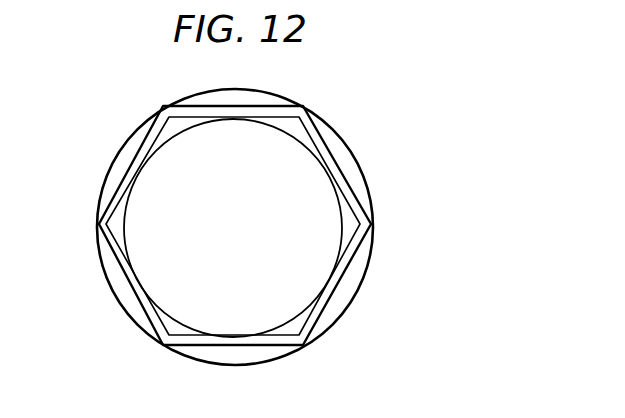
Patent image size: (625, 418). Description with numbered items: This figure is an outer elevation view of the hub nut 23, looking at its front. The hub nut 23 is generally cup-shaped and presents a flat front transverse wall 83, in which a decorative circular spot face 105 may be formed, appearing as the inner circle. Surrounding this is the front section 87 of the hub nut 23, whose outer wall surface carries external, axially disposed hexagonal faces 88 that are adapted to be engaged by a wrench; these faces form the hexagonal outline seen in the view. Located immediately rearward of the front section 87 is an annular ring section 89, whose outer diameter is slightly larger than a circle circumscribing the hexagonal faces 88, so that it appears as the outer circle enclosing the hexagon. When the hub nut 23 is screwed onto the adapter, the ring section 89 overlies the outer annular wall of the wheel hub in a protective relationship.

The hub nut 23 is at (390, 238).
The flat front transverse wall 83 is at (298, 135).
The front section 87 is at (350, 268).
The hexagonal faces 88 is at (107, 195).
The annular ring section 89 is at (225, 352).
The decorative circular spot face 105 is at (316, 200).